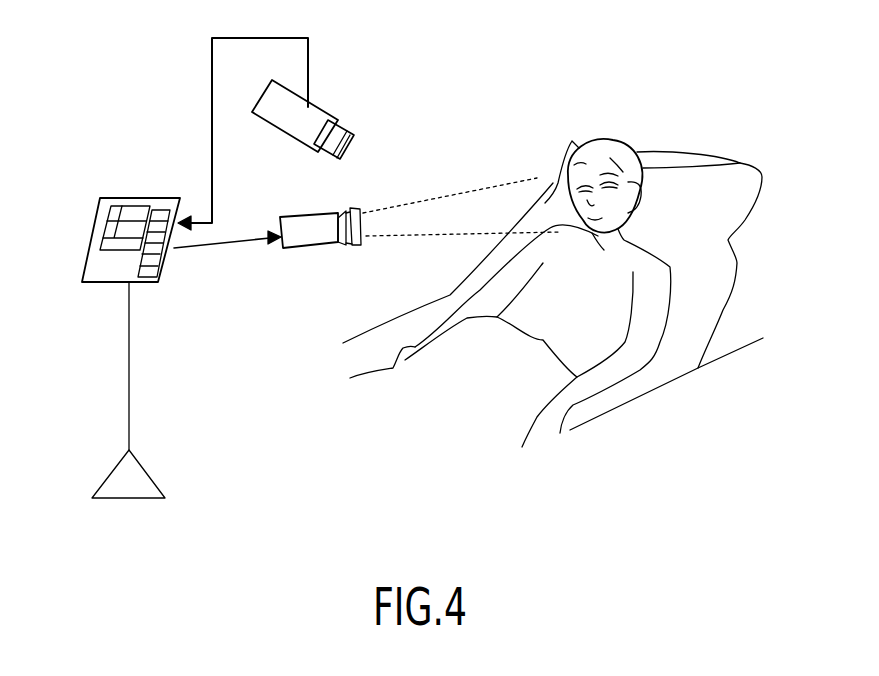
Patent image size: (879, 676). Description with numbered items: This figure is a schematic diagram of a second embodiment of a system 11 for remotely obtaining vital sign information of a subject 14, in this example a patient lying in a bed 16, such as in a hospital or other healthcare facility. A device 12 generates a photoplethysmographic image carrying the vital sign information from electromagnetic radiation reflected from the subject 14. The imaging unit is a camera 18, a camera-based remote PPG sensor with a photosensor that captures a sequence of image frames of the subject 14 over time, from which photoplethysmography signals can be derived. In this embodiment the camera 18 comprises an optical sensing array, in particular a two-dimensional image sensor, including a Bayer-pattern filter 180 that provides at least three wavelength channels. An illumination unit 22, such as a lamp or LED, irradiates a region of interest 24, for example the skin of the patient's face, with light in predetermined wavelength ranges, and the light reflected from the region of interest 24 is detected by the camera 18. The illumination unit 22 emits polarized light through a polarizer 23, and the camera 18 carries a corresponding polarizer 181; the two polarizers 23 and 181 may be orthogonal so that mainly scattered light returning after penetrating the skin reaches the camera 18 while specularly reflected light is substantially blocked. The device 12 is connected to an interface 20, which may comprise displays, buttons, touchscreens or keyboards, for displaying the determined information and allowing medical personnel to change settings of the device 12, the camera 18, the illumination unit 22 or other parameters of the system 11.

The system 11 is at (128, 111).
The device 12 is at (103, 268).
The subject 14 is at (650, 243).
The bed 16 is at (708, 307).
The camera 18 is at (333, 105).
The Bayer-pattern filter 180 is at (340, 118).
The polarizer 181 is at (357, 141).
The interface 20 is at (93, 228).
The illumination unit 22 is at (297, 213).
The polarizer 23 is at (357, 210).
The region of interest 24 is at (548, 185).